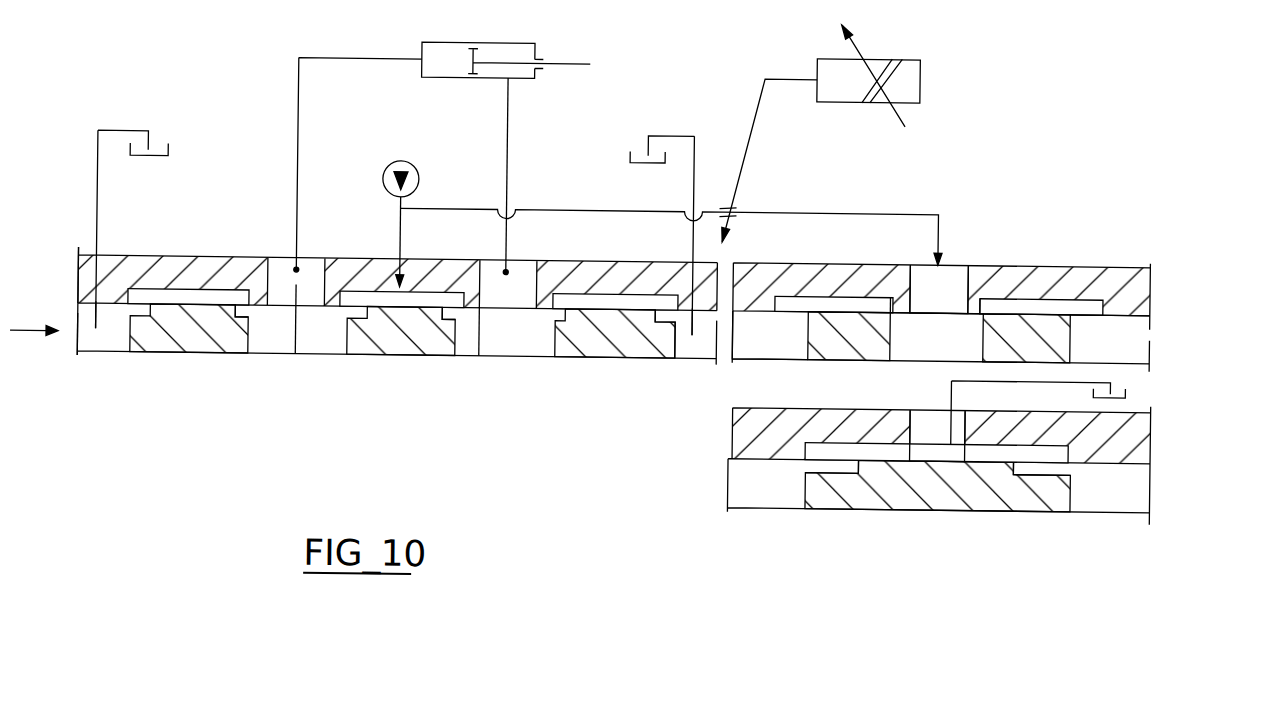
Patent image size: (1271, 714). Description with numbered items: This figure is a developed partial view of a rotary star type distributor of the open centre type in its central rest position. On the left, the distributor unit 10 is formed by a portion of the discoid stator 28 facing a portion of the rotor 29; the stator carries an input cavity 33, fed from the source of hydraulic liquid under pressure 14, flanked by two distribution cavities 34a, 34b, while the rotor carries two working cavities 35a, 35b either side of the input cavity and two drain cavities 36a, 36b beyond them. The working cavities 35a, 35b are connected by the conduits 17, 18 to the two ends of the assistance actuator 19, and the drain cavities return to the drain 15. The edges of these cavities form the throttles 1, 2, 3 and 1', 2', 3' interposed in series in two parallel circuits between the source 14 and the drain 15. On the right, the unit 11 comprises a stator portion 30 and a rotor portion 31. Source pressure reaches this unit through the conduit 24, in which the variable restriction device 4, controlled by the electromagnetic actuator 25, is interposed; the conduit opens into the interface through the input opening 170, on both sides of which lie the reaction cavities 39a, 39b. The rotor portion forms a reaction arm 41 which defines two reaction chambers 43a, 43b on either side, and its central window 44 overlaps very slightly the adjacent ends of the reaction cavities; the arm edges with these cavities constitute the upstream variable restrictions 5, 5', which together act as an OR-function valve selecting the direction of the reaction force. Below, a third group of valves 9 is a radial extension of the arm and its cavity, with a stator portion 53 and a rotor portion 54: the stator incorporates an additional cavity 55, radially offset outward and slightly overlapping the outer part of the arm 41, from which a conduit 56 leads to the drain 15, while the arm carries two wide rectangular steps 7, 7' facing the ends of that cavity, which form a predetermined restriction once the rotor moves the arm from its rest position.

The variable restriction 1 is at (394, 350).
The variable restriction 1' is at (460, 350).
The variable restriction 2 is at (250, 353).
The variable restriction 2' is at (606, 355).
The variable restriction 3 is at (185, 348).
The variable restriction 3' is at (658, 354).
The variable restriction device 4 is at (735, 198).
The upstream variable restriction 5 is at (904, 326).
The upstream variable restriction 5' is at (953, 308).
The rectangular step 7 is at (806, 478).
The rectangular step 7' is at (1069, 482).
The third group of valves 9 is at (1172, 444).
The distributor unit 10 is at (176, 248).
The unit 11 is at (1142, 241).
The source of hydraulic liquid under pressure 14 is at (401, 210).
The reservoir or drain 15 is at (1172, 368).
The conduit 17 is at (310, 270).
The conduit 18 is at (521, 272).
The assistance actuator 19 is at (506, 43).
The conduit 24 is at (612, 200).
The electromagnetic actuator 25 is at (821, 134).
The stator portion 28 is at (70, 266).
The rotor portion 29 is at (82, 346).
The stator portion 30 is at (1170, 279).
The rotor portion 31 is at (1162, 334).
The input cavity 33 is at (380, 296).
The distribution cavity 34a is at (215, 290).
The distribution cavity 34b is at (624, 296).
The working cavity 35a is at (317, 343).
The working cavity 35b is at (531, 341).
The drain cavity 36a is at (106, 342).
The drain cavity 36b is at (718, 345).
The reaction cavity 39a is at (843, 290).
The reaction cavity 39b is at (1042, 290).
The reaction arm 41 is at (839, 340).
The reaction chamber 43a is at (793, 339).
The reaction chamber 43b is at (1126, 337).
The central window 44 is at (966, 343).
The stator portion 53 is at (1162, 410).
The rotor portion 54 is at (1168, 482).
The additional cavity 55 is at (872, 440).
The conduit 56 is at (928, 420).
The input opening 170 is at (949, 280).